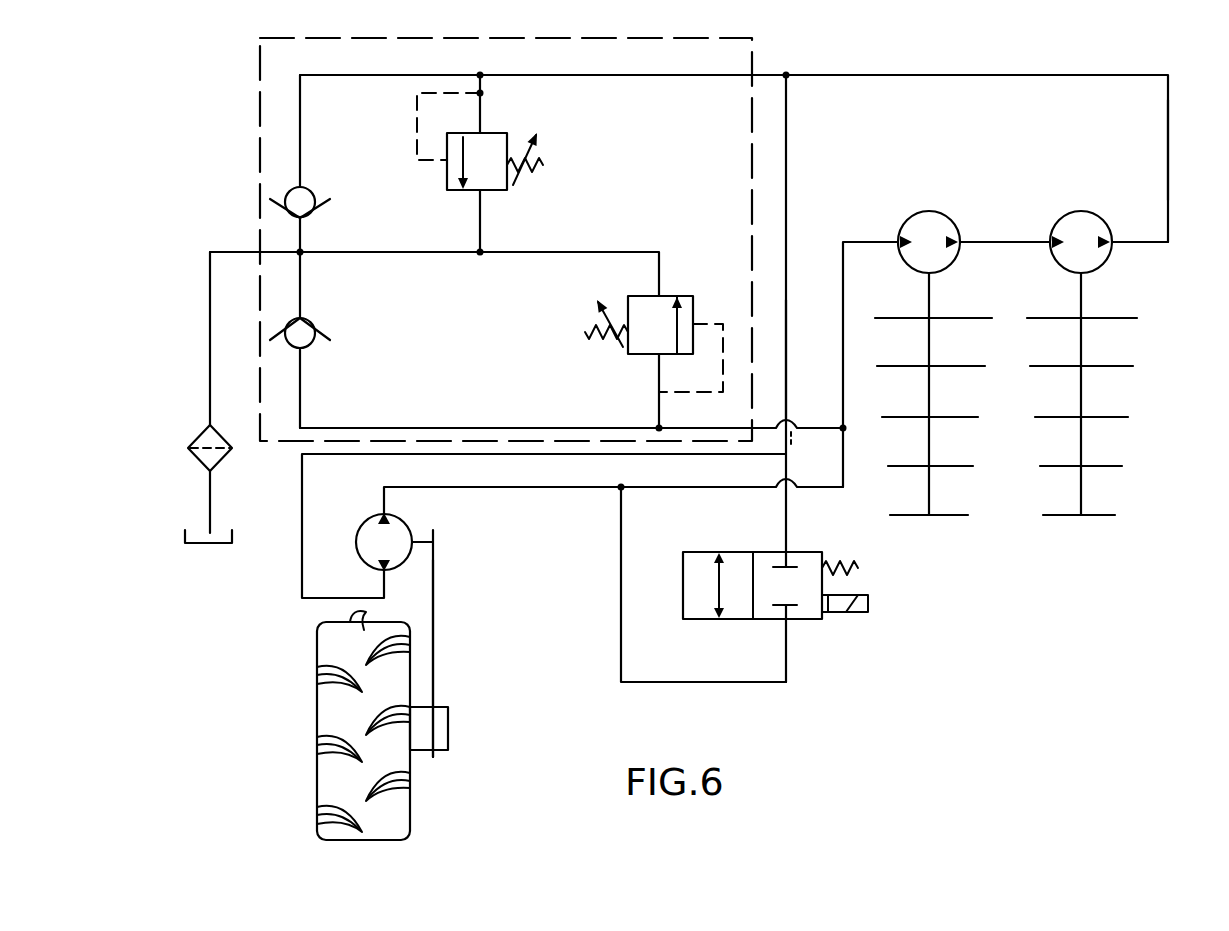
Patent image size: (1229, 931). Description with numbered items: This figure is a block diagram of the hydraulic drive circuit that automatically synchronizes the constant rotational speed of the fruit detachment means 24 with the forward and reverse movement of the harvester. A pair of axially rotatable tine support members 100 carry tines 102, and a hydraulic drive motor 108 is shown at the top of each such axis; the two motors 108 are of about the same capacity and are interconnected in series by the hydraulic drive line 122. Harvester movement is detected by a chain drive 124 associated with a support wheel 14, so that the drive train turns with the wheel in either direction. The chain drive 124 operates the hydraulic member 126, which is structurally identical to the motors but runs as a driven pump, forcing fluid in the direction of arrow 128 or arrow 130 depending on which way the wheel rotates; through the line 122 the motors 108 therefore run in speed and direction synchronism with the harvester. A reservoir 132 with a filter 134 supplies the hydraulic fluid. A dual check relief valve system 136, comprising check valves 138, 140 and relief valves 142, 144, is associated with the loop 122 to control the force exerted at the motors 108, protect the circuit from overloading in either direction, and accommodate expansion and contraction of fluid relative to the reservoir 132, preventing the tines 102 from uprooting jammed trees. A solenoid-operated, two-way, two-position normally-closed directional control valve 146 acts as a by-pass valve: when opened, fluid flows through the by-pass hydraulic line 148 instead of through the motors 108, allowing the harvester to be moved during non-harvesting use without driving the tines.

The support wheel 14 is at (410, 777).
The fruit detachment means 24 is at (940, 517).
The tine support member 100 is at (930, 293).
The tines 102 is at (953, 369).
The hydraulic drive motor 108 is at (945, 222).
The hydraulic drive line 122 is at (1169, 165).
The chain drive 124 is at (434, 643).
The hydraulic member 126 is at (408, 525).
The arrow 128 is at (380, 517).
The arrow 130 is at (376, 565).
The reservoir 132 is at (197, 530).
The filter 134 is at (200, 427).
The dual check relief valve system 136 is at (430, 38).
The check valve 138 is at (501, 191).
The check valve 140 is at (676, 296).
The relief valve 142 is at (330, 199).
The relief valve 144 is at (322, 330).
The directional control valve 146 is at (734, 620).
The by-pass hydraulic line 148 is at (787, 290).